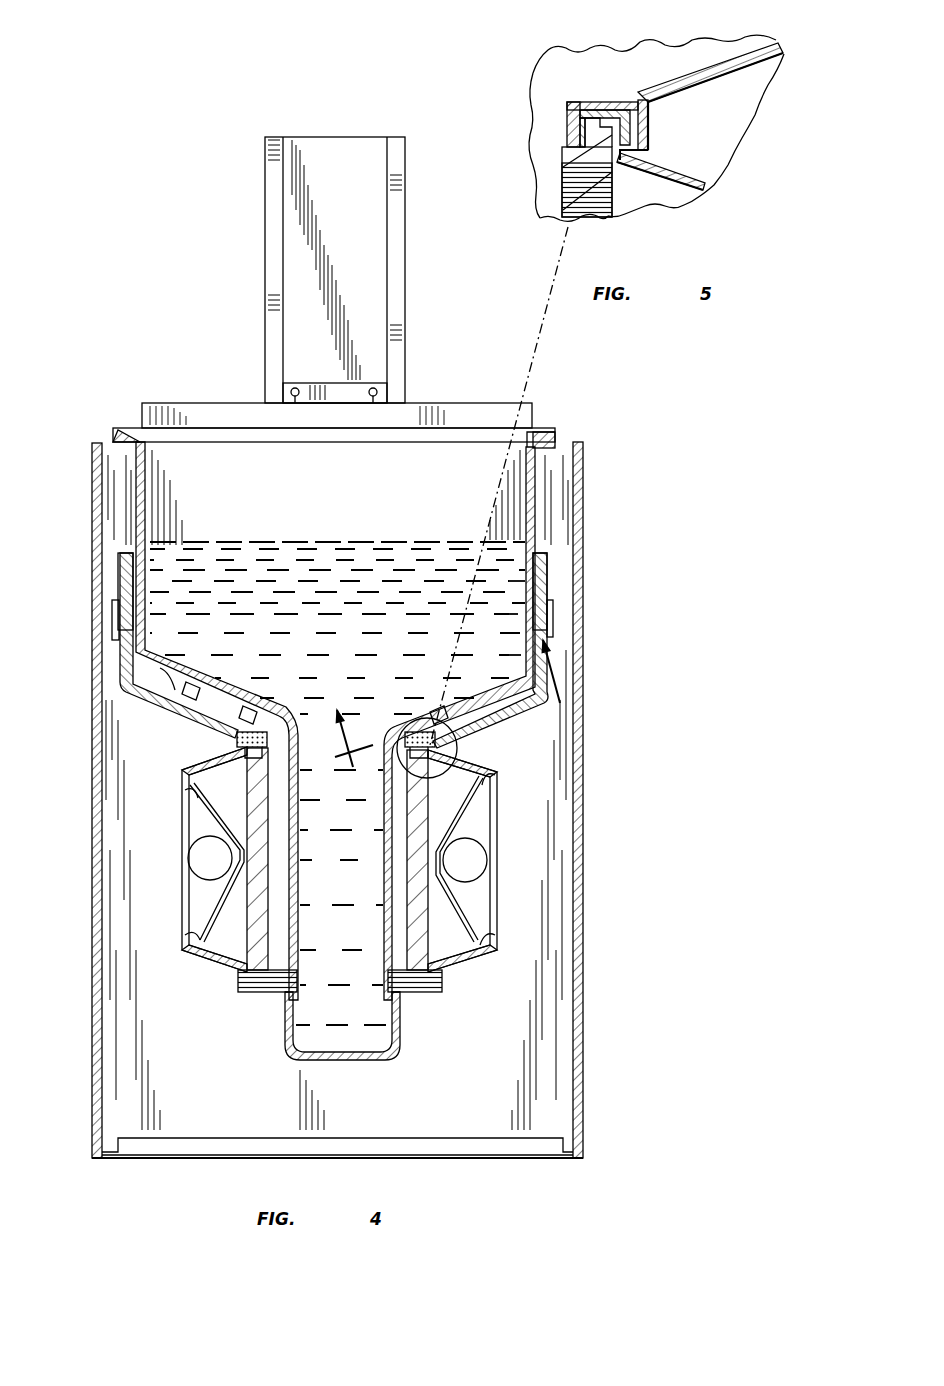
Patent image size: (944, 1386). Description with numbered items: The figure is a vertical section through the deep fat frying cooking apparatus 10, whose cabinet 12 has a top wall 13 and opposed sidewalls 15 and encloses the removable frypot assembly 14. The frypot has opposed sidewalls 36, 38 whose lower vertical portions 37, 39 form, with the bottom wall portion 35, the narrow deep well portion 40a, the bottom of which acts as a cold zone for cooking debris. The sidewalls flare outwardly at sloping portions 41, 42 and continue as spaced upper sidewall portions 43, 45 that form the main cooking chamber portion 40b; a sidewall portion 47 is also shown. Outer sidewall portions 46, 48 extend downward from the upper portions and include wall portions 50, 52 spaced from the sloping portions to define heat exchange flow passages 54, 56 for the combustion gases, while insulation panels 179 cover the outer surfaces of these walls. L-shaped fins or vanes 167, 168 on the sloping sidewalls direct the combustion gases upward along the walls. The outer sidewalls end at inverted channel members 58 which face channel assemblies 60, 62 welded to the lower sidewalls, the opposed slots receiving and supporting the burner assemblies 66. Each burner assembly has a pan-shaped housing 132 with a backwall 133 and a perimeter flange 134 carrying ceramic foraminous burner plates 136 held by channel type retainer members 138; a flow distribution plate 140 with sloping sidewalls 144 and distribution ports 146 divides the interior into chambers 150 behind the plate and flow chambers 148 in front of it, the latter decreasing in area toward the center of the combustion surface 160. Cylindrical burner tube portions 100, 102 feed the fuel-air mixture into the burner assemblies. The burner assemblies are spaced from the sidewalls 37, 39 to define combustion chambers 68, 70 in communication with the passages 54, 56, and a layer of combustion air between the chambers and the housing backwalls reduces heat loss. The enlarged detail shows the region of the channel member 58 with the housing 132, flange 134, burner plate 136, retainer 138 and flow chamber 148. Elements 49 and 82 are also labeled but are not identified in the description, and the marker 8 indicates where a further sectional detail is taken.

In FIG. 4, the cooking apparatus 10 is at (351, 784).
In FIG. 4, the cabinet 12 is at (585, 518).
In FIG. 4, the top wall 13 is at (565, 440).
In FIG. 4, the frypot assembly 14 is at (132, 427).
In FIG. 4, the sidewall 15 is at (92, 1082).
In FIG. 4, the bottom wall portion 35 is at (370, 1062).
In FIG. 4, the sidewall 36 is at (329, 716).
In FIG. 4, the lower vertical sidewall portion 37 is at (385, 968).
In FIG. 4, the sidewall 38 is at (140, 470).
In FIG. 4, the lower vertical sidewall portion 39 is at (297, 962).
In FIG. 4, the deep well portion 40a is at (360, 894).
In FIG. 4, the main interior cooking chamber portion 40b is at (353, 631).
In FIG. 4, the sloping upper sidewall portion 41 is at (420, 715).
In FIG. 4, the sloping upper sidewall portion 42 is at (238, 742).
In FIG. 4, the upper sidewall portion 43 is at (530, 500).
In FIG. 4, the upper sidewall portion 45 is at (152, 588).
In FIG. 4, the outer sidewall portion 46 is at (550, 620).
In FIG. 4, the sidewall portion 47 is at (558, 672).
In FIG. 4, the outer sidewall portion 48 is at (120, 610).
In FIG. 4, the shell wall 49 is at (150, 695).
In FIG. 4, the wall portion 50 is at (364, 650).
In FIG. 5, the wall portion 50 is at (738, 130).
In FIG. 4, the wall portion 52 is at (170, 708).
In FIG. 4, the heat exchange flow passage 54 is at (470, 702).
In FIG. 5, the heat exchange flow passage 54 is at (658, 70).
In FIG. 4, the heat exchange flow passage 56 is at (190, 690).
In FIG. 4, the inverted channel member 58 is at (270, 740).
In FIG. 5, the inverted channel member 58 is at (568, 70).
In FIG. 4, the channel assembly 60 is at (255, 992).
In FIG. 4, the channel assembly 62 is at (285, 1000).
In FIG. 4, the burner assembly 66 is at (185, 957).
In FIG. 4, the combustion chamber 68 is at (407, 820).
In FIG. 5, the combustion chamber 68 is at (560, 205).
In FIG. 4, the combustion chamber 70 is at (263, 930).
In FIG. 4, the tube 82 is at (380, 275).
In FIG. 4, the cylindrical burner tube portion 100 is at (473, 840).
In FIG. 4, the cylindrical burner tube portion 102 is at (195, 835).
In FIG. 4, the housing 132 is at (218, 968).
In FIG. 5, the housing 132 is at (700, 190).
In FIG. 4, the backwall 133 is at (346, 859).
In FIG. 5, the perimeter flange 134 is at (583, 140).
In FIG. 4, the ceramic foraminous burner plate 136 is at (275, 983).
In FIG. 5, the ceramic foraminous burner plate 136 is at (600, 205).
In FIG. 5, the channel type retainer member 138 is at (567, 120).
In FIG. 4, the flow distribution plate 140 is at (215, 960).
In FIG. 4, the sloping sidewall 144 is at (470, 810).
In FIG. 4, the distribution port 146 is at (200, 800).
In FIG. 4, the interior flow chamber 148 is at (247, 789).
In FIG. 5, the interior flow chamber 148 is at (650, 195).
In FIG. 4, the chamber 150 is at (225, 867).
In FIG. 4, the combustion surface 160 is at (298, 858).
In FIG. 4, the vane 167 is at (247, 717).
In FIG. 4, the vane 168 is at (165, 680).
In FIG. 4, the insulation panel 179 is at (126, 560).
In FIG. 4, the section line 8 is at (450, 743).